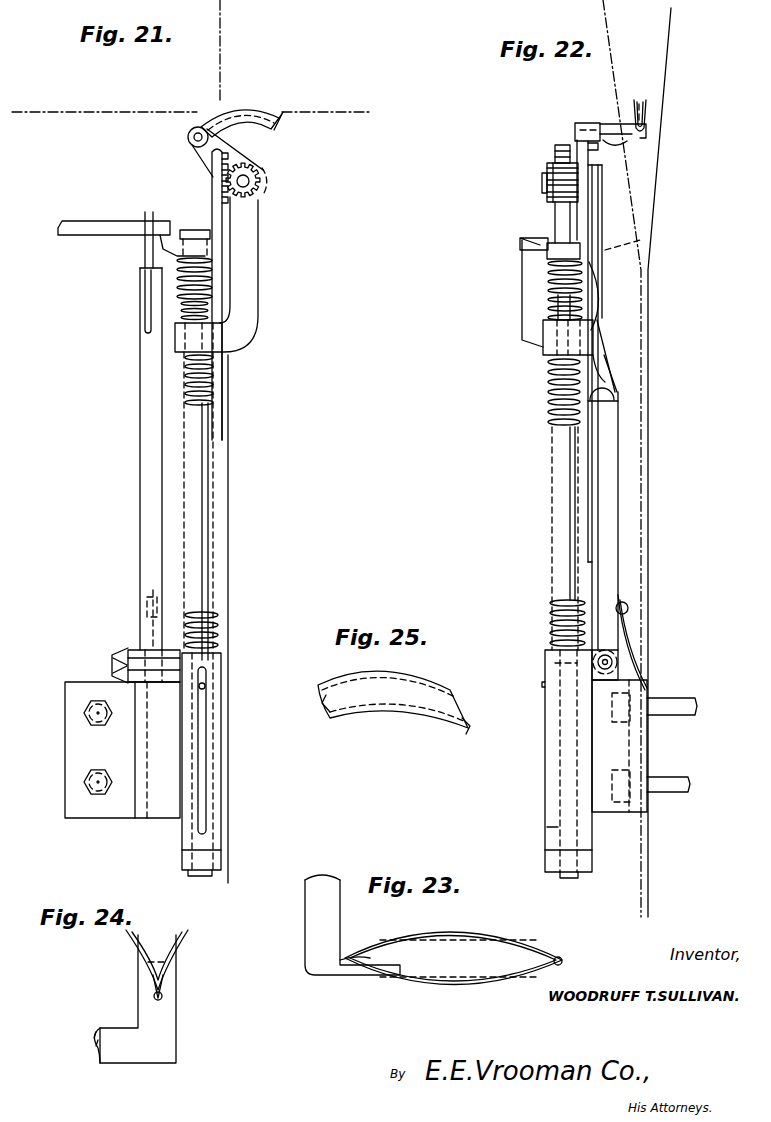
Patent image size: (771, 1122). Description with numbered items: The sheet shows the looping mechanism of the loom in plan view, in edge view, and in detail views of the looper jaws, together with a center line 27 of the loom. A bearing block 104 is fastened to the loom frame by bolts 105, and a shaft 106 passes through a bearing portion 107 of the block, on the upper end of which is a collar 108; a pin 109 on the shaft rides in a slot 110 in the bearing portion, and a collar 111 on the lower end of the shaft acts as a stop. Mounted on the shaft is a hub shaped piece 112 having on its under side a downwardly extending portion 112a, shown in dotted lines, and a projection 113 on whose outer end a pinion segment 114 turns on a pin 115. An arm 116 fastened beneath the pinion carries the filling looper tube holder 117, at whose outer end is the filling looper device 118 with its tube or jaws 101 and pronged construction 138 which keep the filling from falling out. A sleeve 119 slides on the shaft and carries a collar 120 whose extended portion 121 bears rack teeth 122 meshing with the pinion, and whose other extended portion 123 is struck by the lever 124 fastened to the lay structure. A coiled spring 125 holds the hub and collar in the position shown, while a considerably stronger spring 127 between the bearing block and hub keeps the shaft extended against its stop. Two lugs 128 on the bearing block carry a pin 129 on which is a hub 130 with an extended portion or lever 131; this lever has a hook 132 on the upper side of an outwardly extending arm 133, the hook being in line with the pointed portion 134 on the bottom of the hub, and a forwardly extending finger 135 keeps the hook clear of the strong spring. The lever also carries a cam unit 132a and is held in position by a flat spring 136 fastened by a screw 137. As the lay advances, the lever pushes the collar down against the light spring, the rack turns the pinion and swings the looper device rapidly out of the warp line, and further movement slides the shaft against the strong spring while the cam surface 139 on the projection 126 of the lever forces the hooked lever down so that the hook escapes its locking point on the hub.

In FIG. 21, the center line 27 is at (368, 110).
In FIG. 22, the center line 27 is at (649, 104).
In FIG. 25, the tube or jaws 101 is at (425, 694).
In FIG. 23, the tube or jaws 101 is at (500, 945).
In FIG. 24, the tube or jaws 101 is at (182, 930).
In FIG. 22, the tube or jaws 101 is at (648, 114).
In FIG. 21, the bearing block 104 is at (101, 818).
In FIG. 22, the bearing block 104 is at (635, 748).
In FIG. 21, the bolts 105 is at (83, 714).
In FIG. 22, the bolts 105 is at (672, 700).
In FIG. 21, the shaft 106 is at (196, 425).
In FIG. 22, the shaft 106 is at (562, 466).
In FIG. 21, the bearing portion 107 is at (212, 672).
In FIG. 22, the bearing portion 107 is at (545, 752).
In FIG. 21, the collar 108 is at (186, 230).
In FIG. 21, the pin 109 is at (206, 685).
In FIG. 21, the slot 110 is at (206, 751).
In FIG. 21, the collar 111 is at (214, 860).
In FIG. 22, the collar 111 is at (590, 856).
In FIG. 21, the hub shaped piece 112 is at (224, 348).
In FIG. 22, the hub shaped piece 112 is at (545, 352).
In FIG. 22, the downwardly extending portion 112a is at (603, 364).
In FIG. 21, the projection 113 is at (242, 285).
In FIG. 22, the projection 113 is at (596, 226).
In FIG. 21, the pinion segment 114 is at (256, 170).
In FIG. 22, the pinion segment 114 is at (548, 195).
In FIG. 21, the pin 115 is at (249, 182).
In FIG. 22, the pin 115 is at (600, 182).
In FIG. 22, the arm 116 is at (575, 138).
In FIG. 23, the filling looper tube holder 117 is at (320, 940).
In FIG. 24, the filling looper tube holder 117 is at (112, 1055).
In FIG. 22, the filling looper tube holder 117 is at (612, 146).
In FIG. 21, the filling looper device 118 is at (240, 111).
In FIG. 25, the filling looper device 118 is at (393, 694).
In FIG. 23, the filling looper device 118 is at (453, 946).
In FIG. 24, the filling looper device 118 is at (136, 960).
In FIG. 22, the filling looper device 118 is at (639, 103).
In FIG. 21, the sleeve 119 is at (207, 272).
In FIG. 22, the sleeve 119 is at (582, 264).
In FIG. 22, the collar 120 is at (530, 255).
In FIG. 21, the extended portion 121 is at (222, 226).
In FIG. 22, the extended portion 121 is at (556, 216).
In FIG. 21, the rack teeth 122 is at (236, 150).
In FIG. 21, the extended portion 123 is at (163, 248).
In FIG. 21, the lever 124 is at (95, 225).
In FIG. 21, the coiled spring 125 is at (215, 305).
In FIG. 22, the coiled spring 125 is at (560, 285).
In FIG. 21, the projection 126 is at (147, 331).
In FIG. 22, the projection 126 is at (530, 320).
In FIG. 21, the spring 127 is at (210, 628).
In FIG. 22, the spring 127 is at (556, 610).
In FIG. 21, the lugs 128 is at (118, 655).
In FIG. 21, the pin 129 is at (118, 663).
In FIG. 21, the hub 130 is at (140, 640).
In FIG. 21, the extended portion 131 is at (141, 462).
In FIG. 22, the extended portion 131 is at (606, 440).
In FIG. 22, the hook 132 is at (556, 420).
In FIG. 22, the cam unit 132a is at (612, 394).
In FIG. 21, the outwardly extending arm 133 is at (174, 406).
In FIG. 22, the pointed portion 134 is at (602, 300).
In FIG. 22, the finger 135 is at (607, 376).
In FIG. 22, the flat spring 136 is at (628, 648).
In FIG. 22, the screw 137 is at (628, 608).
In FIG. 21, the pronged construction 138 is at (280, 114).
In FIG. 25, the pronged construction 138 is at (468, 725).
In FIG. 23, the pronged construction 138 is at (564, 961).
In FIG. 24, the pronged construction 138 is at (154, 996).
In FIG. 22, the cam surface 139 is at (641, 240).